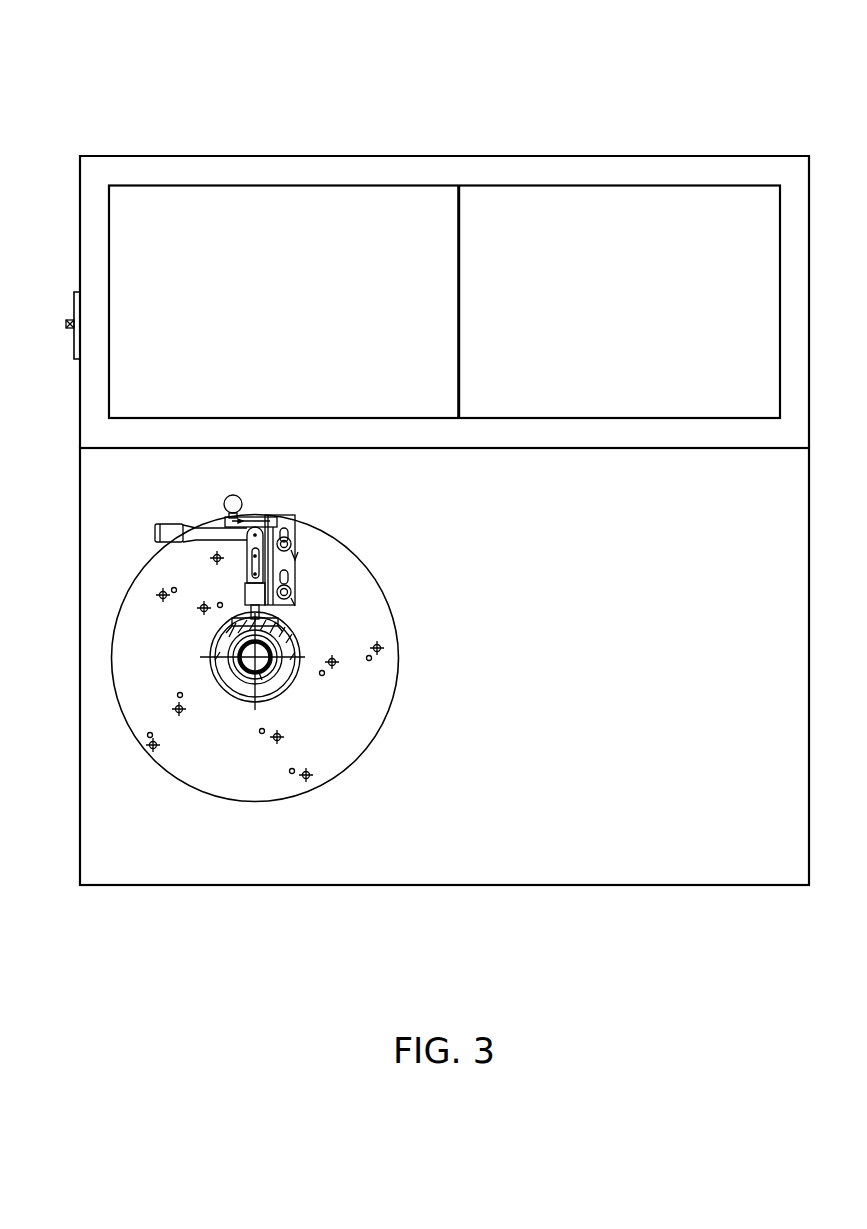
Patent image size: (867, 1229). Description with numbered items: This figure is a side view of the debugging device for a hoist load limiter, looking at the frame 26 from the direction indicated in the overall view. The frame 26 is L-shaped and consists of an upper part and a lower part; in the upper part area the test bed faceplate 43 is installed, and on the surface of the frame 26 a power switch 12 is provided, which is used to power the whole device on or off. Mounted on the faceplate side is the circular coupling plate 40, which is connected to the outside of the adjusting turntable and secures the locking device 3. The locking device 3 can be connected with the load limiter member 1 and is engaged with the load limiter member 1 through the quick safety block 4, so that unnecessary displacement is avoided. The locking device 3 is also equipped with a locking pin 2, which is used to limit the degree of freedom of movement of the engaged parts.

The load limiter member 1 is at (242, 619).
The locking pin 2 is at (295, 600).
The locking device 3 is at (197, 536).
The quick safety block 4 is at (293, 513).
The power switch 12 is at (70, 322).
The frame 26 is at (316, 156).
The coupling plate 40 is at (348, 713).
The test bed faceplate 43 is at (554, 851).